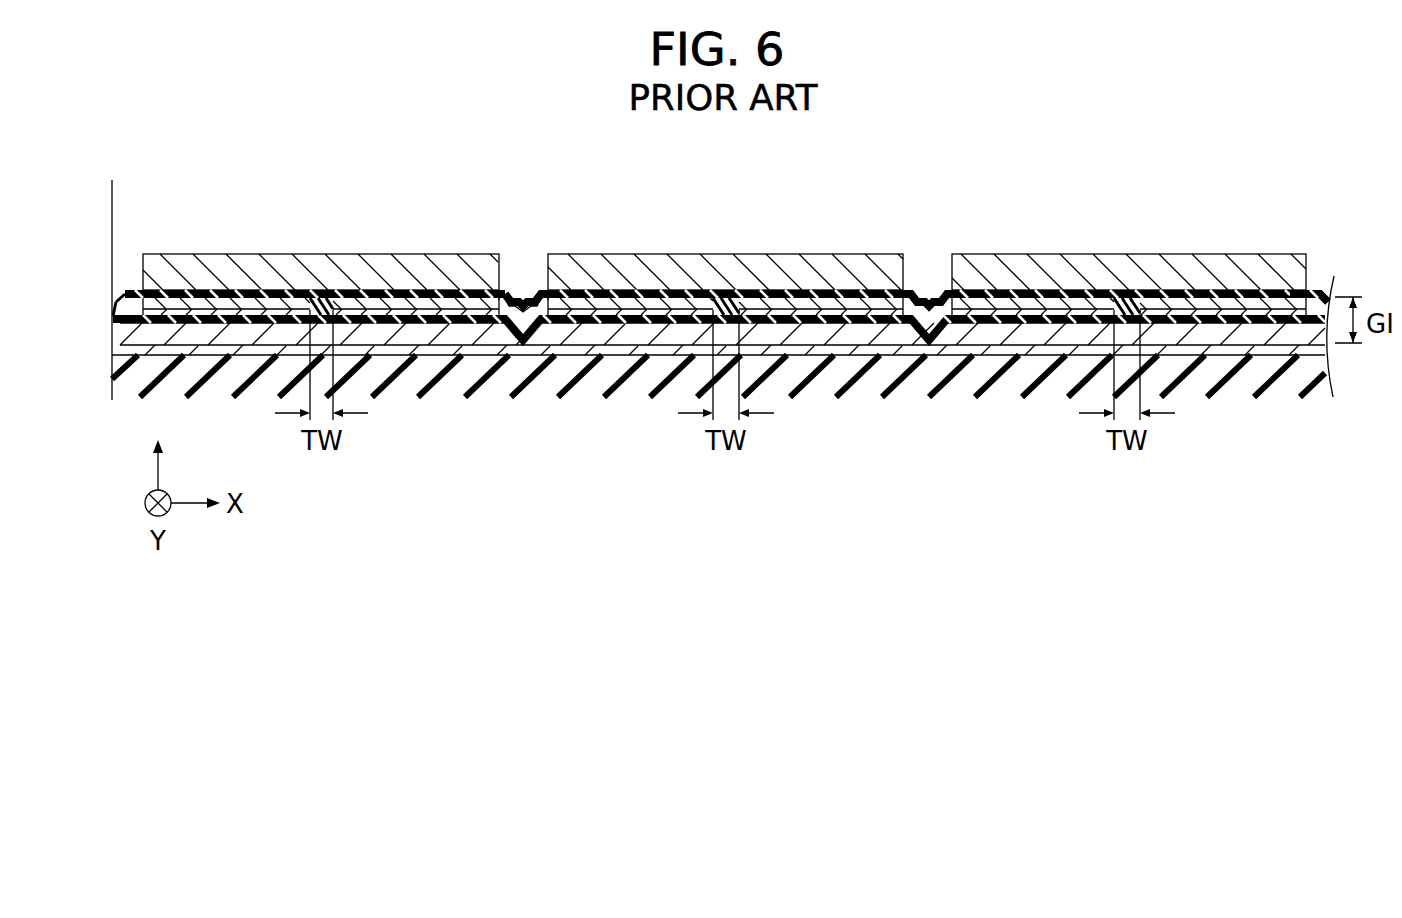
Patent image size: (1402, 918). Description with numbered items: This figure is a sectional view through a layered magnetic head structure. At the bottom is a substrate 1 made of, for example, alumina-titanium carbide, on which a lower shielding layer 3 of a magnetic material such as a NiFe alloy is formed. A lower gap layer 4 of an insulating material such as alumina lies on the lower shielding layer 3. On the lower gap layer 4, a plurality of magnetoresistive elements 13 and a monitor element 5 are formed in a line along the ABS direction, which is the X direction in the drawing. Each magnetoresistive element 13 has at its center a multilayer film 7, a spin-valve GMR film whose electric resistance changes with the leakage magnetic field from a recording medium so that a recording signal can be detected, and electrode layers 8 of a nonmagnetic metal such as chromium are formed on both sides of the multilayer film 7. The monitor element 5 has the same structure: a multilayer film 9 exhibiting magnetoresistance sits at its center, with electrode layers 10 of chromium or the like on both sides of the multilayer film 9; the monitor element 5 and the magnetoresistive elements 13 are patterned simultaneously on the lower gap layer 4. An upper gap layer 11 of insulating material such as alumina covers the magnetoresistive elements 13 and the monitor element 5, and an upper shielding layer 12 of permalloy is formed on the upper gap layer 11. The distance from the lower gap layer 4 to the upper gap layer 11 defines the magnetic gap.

The substrate 1 is at (1287, 377).
The lower shielding layer 3 is at (452, 335).
The lower gap layer 4 is at (1315, 297).
The monitor element 5 is at (366, 284).
The multilayer film 7 is at (730, 303).
The electrode layers 8 is at (655, 303).
The multilayer film 9 is at (326, 305).
The electrode layers 10 is at (250, 305).
The upper gap layer 11 is at (506, 292).
The upper shielding layer 12 is at (184, 265).
The magnetoresistive elements 13 is at (770, 284).